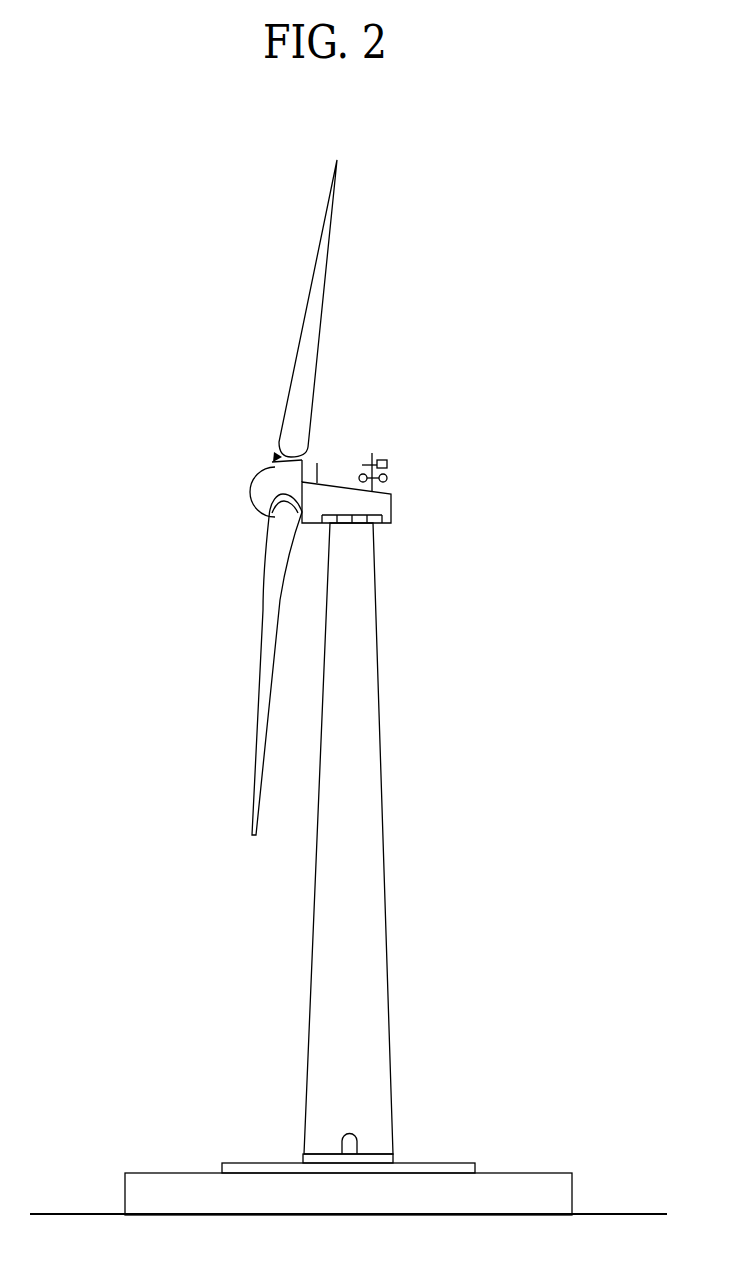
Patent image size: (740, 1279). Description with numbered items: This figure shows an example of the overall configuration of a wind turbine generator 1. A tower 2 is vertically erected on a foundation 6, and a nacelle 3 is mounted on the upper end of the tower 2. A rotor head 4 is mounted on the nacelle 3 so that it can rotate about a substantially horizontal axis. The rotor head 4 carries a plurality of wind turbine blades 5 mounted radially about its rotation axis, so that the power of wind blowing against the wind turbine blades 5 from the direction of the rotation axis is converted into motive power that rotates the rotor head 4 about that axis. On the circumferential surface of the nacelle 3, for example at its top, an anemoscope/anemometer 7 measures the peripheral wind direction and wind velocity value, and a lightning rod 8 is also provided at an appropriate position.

The wind turbine generator 1 is at (484, 413).
The tower 2 is at (380, 705).
The nacelle 3 is at (382, 434).
The rotor head 4 is at (247, 491).
The wind turbine blade 5 is at (328, 256).
The foundation 6 is at (556, 1178).
The anemoscope/anemometer 7 is at (388, 478).
The lightning rod 8 is at (324, 464).